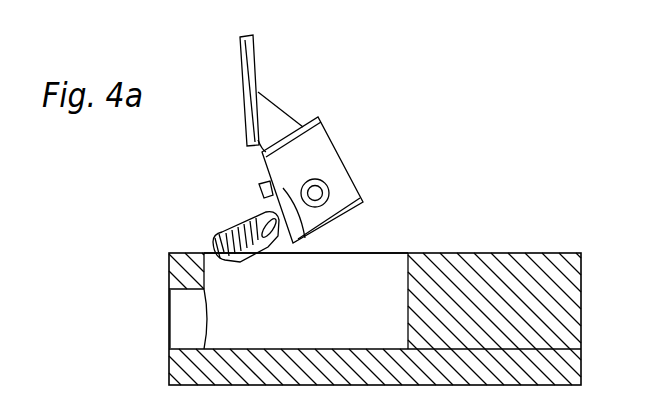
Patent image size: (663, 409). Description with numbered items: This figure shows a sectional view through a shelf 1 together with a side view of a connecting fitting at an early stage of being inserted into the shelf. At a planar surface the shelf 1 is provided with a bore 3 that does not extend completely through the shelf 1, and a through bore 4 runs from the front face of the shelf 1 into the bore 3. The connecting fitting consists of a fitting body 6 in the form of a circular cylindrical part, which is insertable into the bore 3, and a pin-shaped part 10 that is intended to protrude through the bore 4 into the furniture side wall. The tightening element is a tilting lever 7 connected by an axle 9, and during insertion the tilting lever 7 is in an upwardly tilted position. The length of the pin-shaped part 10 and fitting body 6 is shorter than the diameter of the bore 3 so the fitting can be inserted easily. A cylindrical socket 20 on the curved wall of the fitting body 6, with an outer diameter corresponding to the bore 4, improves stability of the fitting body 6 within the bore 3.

The shelf 1 is at (563, 246).
The bore 3 is at (318, 283).
The through bore 4 is at (187, 328).
The fitting body 6 is at (312, 145).
The tilting lever 7 is at (245, 50).
The axle 9 is at (315, 193).
The pin-shaped part 10 is at (222, 228).
The socket 20 is at (262, 186).